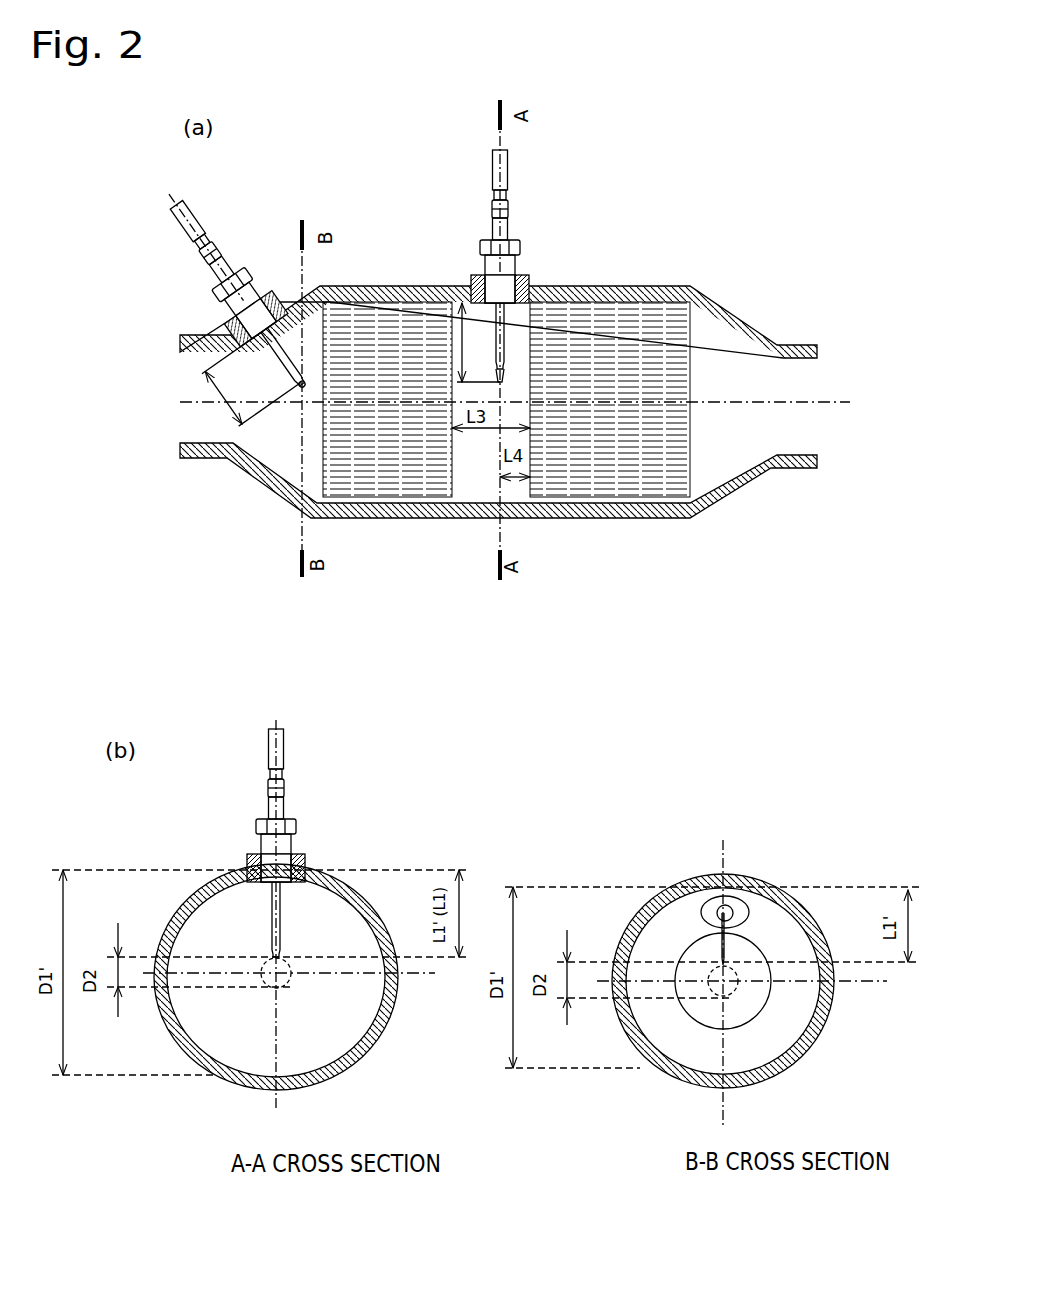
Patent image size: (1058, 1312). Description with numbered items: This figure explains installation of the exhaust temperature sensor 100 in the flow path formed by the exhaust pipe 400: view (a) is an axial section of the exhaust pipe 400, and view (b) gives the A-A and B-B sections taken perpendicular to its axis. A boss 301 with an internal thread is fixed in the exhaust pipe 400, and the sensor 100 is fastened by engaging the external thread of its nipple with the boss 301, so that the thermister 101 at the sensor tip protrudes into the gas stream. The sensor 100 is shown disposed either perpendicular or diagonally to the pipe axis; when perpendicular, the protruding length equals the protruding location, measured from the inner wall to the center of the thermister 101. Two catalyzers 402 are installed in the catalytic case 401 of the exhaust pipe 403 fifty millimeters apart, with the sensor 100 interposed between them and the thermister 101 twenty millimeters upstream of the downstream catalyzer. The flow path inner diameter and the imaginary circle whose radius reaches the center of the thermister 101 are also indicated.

The exhaust temperature sensor 100 is at (223, 273).
The thermister 101 is at (498, 378).
The boss 301 is at (474, 276).
The exhaust pipe 400 is at (408, 283).
The catalytic case 401 is at (260, 480).
The catalyzer 402 is at (407, 460).
The exhaust pipe 403 is at (807, 348).